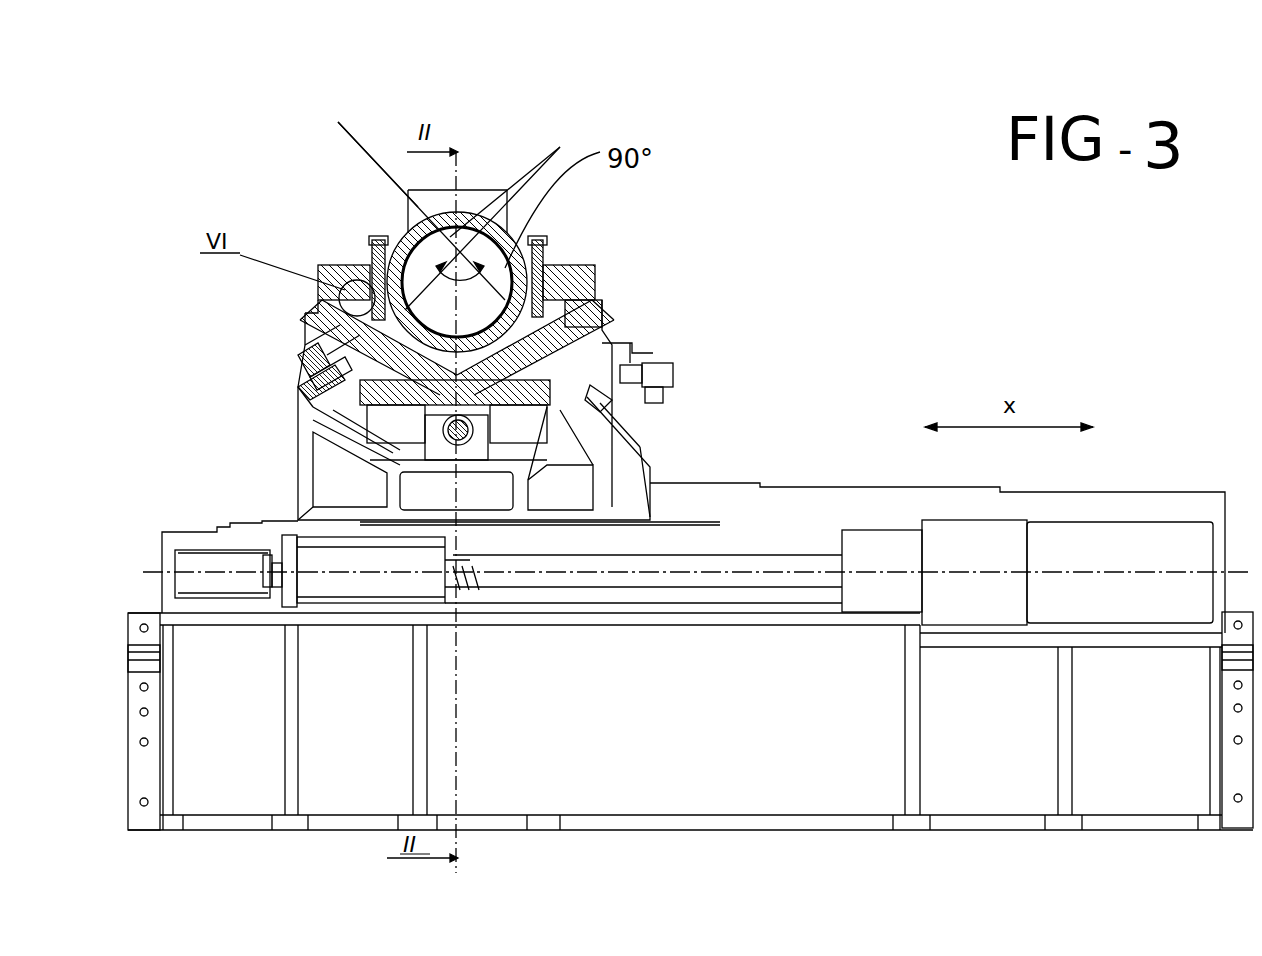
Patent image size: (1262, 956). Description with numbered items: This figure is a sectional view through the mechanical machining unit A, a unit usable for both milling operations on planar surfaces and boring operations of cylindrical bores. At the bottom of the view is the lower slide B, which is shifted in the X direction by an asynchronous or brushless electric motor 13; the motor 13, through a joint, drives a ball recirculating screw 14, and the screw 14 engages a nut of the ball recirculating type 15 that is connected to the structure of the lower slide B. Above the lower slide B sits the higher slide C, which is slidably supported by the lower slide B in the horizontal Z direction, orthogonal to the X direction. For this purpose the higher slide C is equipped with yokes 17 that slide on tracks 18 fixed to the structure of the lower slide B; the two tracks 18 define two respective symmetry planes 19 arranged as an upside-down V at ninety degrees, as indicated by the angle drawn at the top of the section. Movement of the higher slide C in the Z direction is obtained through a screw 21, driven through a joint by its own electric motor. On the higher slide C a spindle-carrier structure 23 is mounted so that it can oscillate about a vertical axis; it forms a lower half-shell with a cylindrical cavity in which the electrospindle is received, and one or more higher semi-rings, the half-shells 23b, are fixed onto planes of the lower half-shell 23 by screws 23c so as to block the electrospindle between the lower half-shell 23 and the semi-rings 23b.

The electric motor 13 is at (1098, 525).
The ball recirculating screw 14 is at (752, 572).
The ball recirculating nut 15 is at (352, 585).
The yokes 17 is at (313, 355).
The tracks 18 is at (312, 357).
The symmetry planes 19 is at (345, 128).
The screw 21 is at (458, 442).
The spindle-carrier structure 23 is at (395, 330).
The half-shell 23b is at (480, 215).
The screws 23c is at (368, 253).
The mechanical machining unit A is at (811, 302).
The lower slide B is at (292, 475).
The higher slide C is at (327, 320).